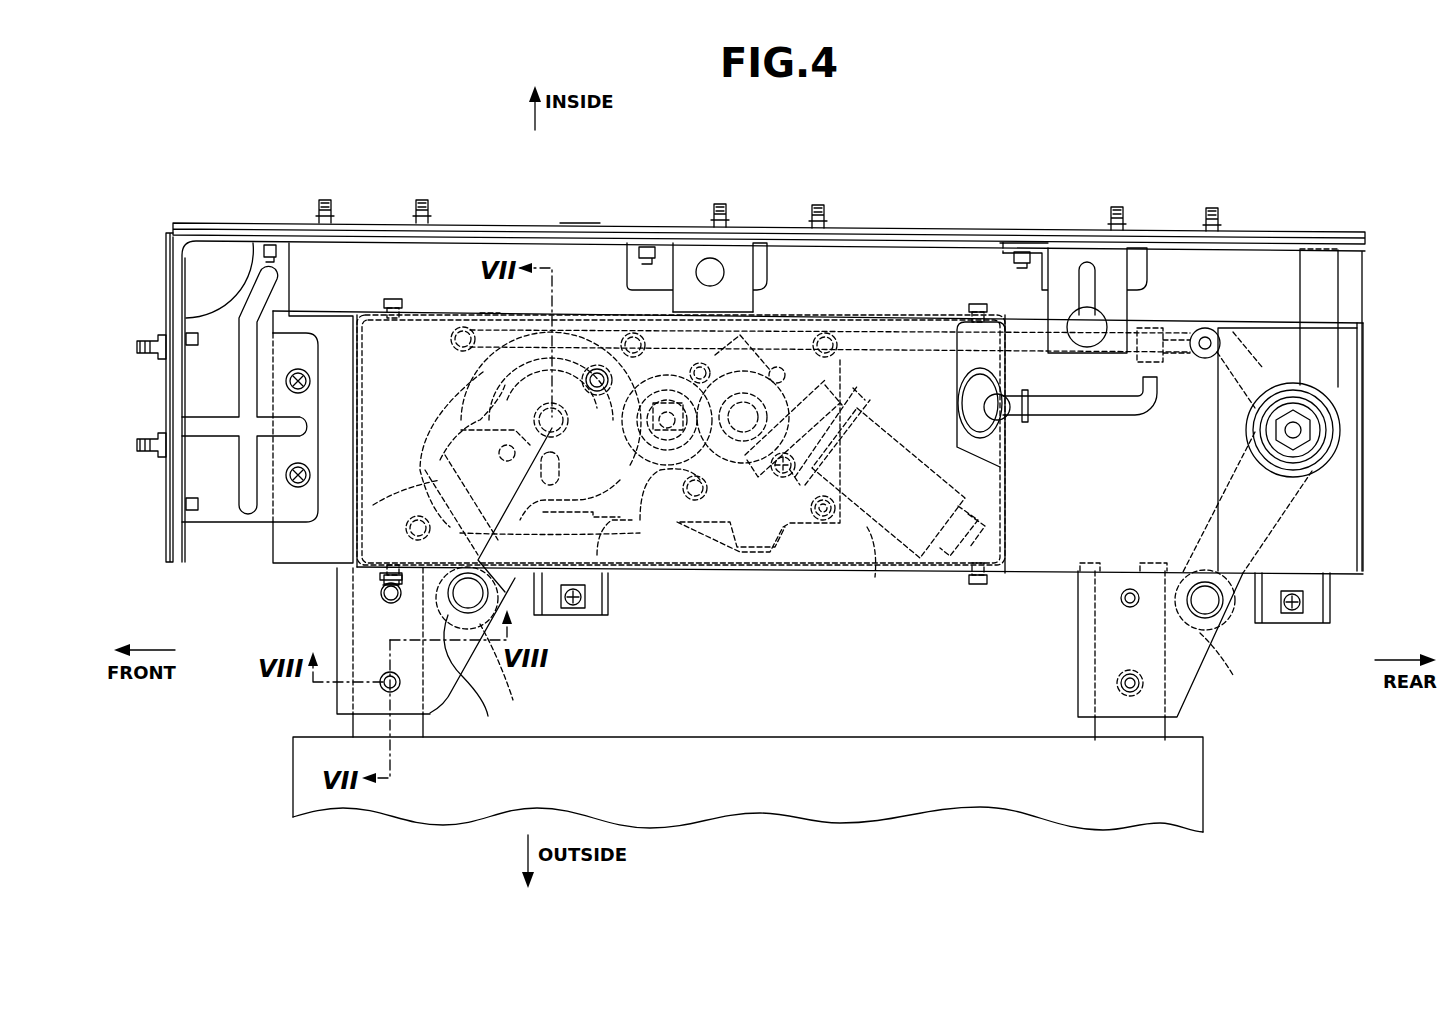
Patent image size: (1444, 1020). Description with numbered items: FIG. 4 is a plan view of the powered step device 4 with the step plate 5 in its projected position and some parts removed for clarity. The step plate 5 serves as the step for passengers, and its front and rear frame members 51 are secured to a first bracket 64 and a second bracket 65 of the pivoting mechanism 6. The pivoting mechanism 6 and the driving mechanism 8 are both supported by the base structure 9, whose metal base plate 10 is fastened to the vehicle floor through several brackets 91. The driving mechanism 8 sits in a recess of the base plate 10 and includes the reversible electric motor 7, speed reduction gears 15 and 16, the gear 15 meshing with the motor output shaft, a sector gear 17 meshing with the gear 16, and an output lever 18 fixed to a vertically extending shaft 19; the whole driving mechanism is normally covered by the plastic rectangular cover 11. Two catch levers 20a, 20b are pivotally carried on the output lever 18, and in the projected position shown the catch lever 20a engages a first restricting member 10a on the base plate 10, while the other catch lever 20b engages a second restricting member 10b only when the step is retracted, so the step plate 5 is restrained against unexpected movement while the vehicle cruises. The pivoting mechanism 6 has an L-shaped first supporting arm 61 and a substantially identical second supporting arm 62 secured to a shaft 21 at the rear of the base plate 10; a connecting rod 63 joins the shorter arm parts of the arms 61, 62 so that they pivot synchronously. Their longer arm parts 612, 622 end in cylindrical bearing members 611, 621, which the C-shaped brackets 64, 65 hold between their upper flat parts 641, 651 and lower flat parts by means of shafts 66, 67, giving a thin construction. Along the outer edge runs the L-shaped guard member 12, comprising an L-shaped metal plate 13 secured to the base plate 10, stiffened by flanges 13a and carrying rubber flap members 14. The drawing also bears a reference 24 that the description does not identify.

The step device 4 is at (1040, 130).
The step plate 5 is at (1205, 798).
The pivoting mechanism 6 is at (1262, 658).
The reversible electric motor 7 is at (873, 528).
The driving mechanism 8 is at (720, 488).
The base structure 9 is at (1042, 231).
The base plate 10 is at (1363, 541).
The first restricting member 10a is at (613, 515).
The second restricting member 10b is at (490, 313).
The plastic rectangular cover 11 is at (937, 550).
The L-shaped guard member 12 is at (577, 226).
The L-shaped metal plate 13 is at (862, 238).
The flanges 13a is at (505, 242).
The flap members 14 is at (362, 223).
The speed reduction gear 15 is at (790, 495).
The speed reduction gear 16 is at (682, 520).
The sector gear 17 is at (640, 515).
The output lever 18 is at (440, 460).
The vertically extending shaft 19 is at (556, 407).
The catch lever 20a is at (605, 608).
The catch lever 20b is at (420, 420).
The shaft 21 is at (1307, 428).
The hole 24 is at (380, 679).
The frame members 51 is at (353, 726).
The first supporting arm 61 is at (517, 580).
The second supporting arm 62 is at (1297, 500).
The connecting rod 63 is at (898, 330).
The first bracket 64 is at (337, 629).
The second bracket 65 is at (1078, 628).
The shaft 66 is at (469, 675).
The shaft 67 is at (1227, 603).
The brackets 91 is at (757, 276).
The cylindrical bearing member 611 is at (513, 676).
The longer arm part 612 is at (373, 505).
The cylindrical bearing member 621 is at (1237, 668).
The longer arm part 622 is at (1200, 530).
The upper flat part 641 is at (368, 608).
The upper flat part 651 is at (1148, 658).